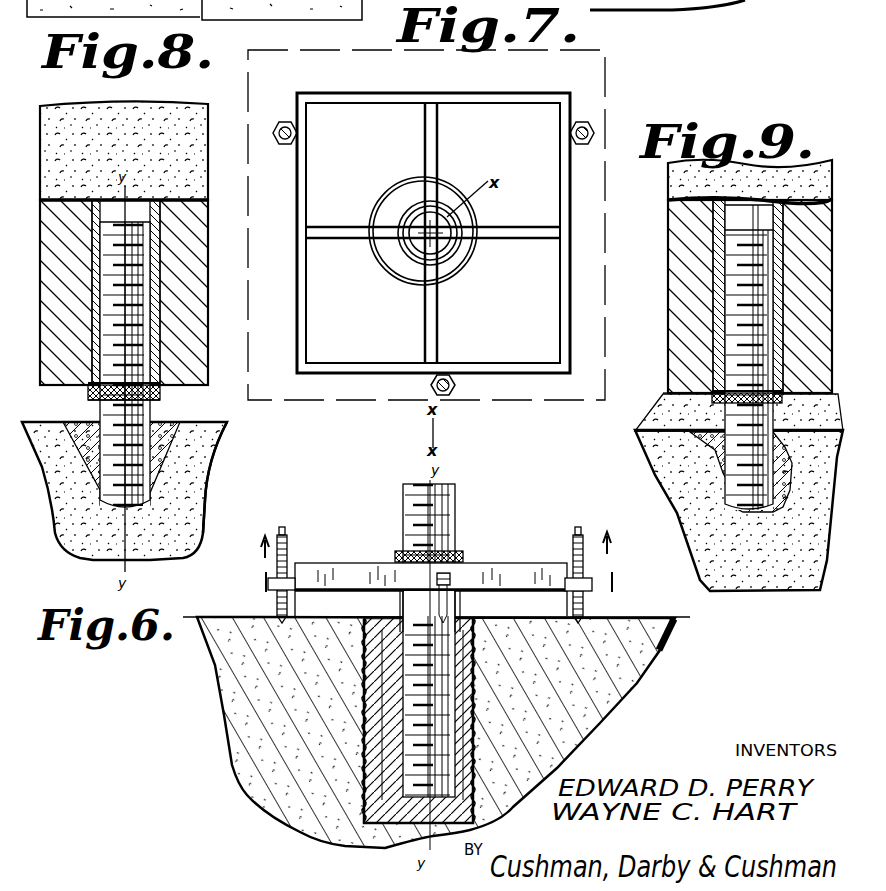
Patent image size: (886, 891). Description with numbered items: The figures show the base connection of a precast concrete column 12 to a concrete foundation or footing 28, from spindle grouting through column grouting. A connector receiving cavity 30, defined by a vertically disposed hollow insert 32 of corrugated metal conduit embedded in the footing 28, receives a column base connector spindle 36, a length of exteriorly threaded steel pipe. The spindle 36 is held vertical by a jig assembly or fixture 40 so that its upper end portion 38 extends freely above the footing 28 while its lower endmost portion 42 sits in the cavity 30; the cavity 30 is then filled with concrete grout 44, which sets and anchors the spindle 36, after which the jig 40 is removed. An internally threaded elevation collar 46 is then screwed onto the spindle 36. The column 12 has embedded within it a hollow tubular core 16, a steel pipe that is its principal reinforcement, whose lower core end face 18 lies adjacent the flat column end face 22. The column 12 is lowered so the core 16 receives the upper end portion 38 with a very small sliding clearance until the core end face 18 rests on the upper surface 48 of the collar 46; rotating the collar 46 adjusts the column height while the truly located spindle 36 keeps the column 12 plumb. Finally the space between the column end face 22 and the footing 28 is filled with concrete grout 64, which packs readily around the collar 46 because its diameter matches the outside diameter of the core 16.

In FIG. 8, the precast concrete column 12 is at (185, 300).
In FIG. 9, the precast concrete column 12 is at (678, 293).
In FIG. 8, the hollow tubular core 16 is at (158, 282).
In FIG. 9, the hollow tubular core 16 is at (713, 328).
In FIG. 8, the core end face 18 is at (90, 398).
In FIG. 9, the core end face 18 is at (710, 401).
In FIG. 8, the column end face 22 is at (52, 389).
In FIG. 9, the column end face 22 is at (662, 397).
In FIG. 6, the concrete foundation or footing 28 is at (240, 617).
In FIG. 7, the connector receiving cavity 30 is at (447, 192).
In FIG. 7, the hollow insert 32 is at (418, 178).
In FIG. 6, the hollow insert 32 is at (487, 627).
In FIG. 8, the column base connector spindle 36 is at (146, 420).
In FIG. 7, the column base connector spindle 36 is at (458, 230).
In FIG. 9, the column base connector spindle 36 is at (787, 450).
In FIG. 6, the column base connector spindle 36 is at (477, 692).
In FIG. 8, the upper end portion 38 is at (146, 230).
In FIG. 9, the upper end portion 38 is at (732, 251).
In FIG. 6, the upper end portion 38 is at (450, 512).
In FIG. 7, the jig assembly or fixture 40 is at (536, 377).
In FIG. 6, the jig assembly or fixture 40 is at (556, 548).
In FIG. 8, the lower endmost portion 42 is at (150, 509).
In FIG. 6, the lower endmost portion 42 is at (457, 778).
In FIG. 8, the concrete grout 44 is at (188, 430).
In FIG. 9, the concrete grout 44 is at (693, 450).
In FIG. 6, the concrete grout 44 is at (386, 617).
In FIG. 8, the elevation collar 46 is at (162, 392).
In FIG. 7, the elevation collar 46 is at (453, 262).
In FIG. 9, the elevation collar 46 is at (712, 396).
In FIG. 6, the elevation collar 46 is at (464, 557).
In FIG. 8, the upper surface 48 is at (160, 377).
In FIG. 9, the upper surface 48 is at (712, 382).
In FIG. 9, the concrete grout 64 is at (663, 423).